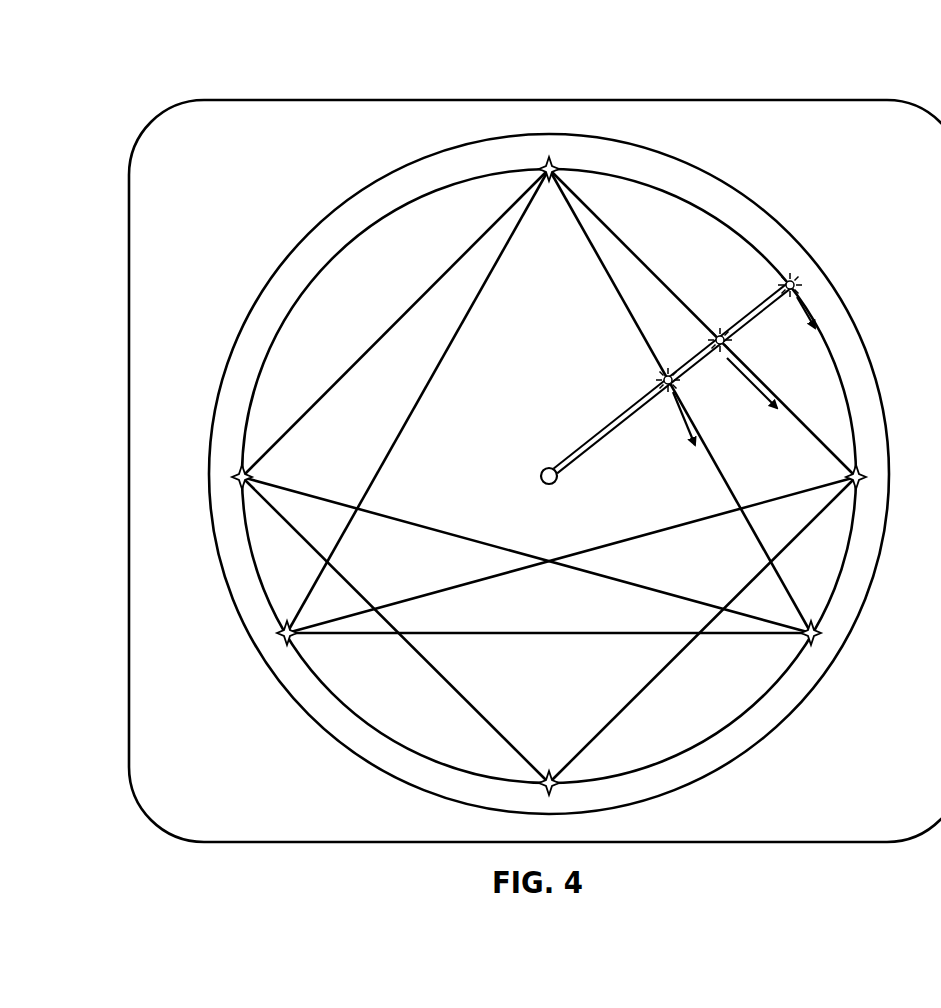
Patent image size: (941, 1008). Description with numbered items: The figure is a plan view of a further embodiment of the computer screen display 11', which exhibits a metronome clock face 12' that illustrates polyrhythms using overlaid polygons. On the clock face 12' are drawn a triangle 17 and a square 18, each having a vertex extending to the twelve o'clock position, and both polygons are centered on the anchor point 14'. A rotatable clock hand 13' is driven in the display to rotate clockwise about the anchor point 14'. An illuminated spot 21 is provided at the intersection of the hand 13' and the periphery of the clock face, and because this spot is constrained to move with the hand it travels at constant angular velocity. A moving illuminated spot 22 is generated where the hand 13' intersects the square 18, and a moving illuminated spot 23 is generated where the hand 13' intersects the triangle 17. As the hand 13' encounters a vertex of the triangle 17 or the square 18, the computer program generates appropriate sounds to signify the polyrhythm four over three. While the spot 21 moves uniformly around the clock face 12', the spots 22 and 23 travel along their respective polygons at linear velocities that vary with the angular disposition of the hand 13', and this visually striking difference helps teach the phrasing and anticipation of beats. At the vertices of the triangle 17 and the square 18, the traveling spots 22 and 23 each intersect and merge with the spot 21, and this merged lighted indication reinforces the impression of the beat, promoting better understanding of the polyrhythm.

The computer screen display 11' is at (519, 447).
The clock face 12' is at (549, 474).
The rotatable clock hand 13' is at (669, 378).
The anchor point 14' is at (572, 502).
The triangle 17 is at (410, 412).
The square 18 is at (380, 333).
The illuminated spot 21 is at (788, 280).
The moving illuminated spot 22 is at (719, 334).
The moving illuminated spot 23 is at (669, 374).